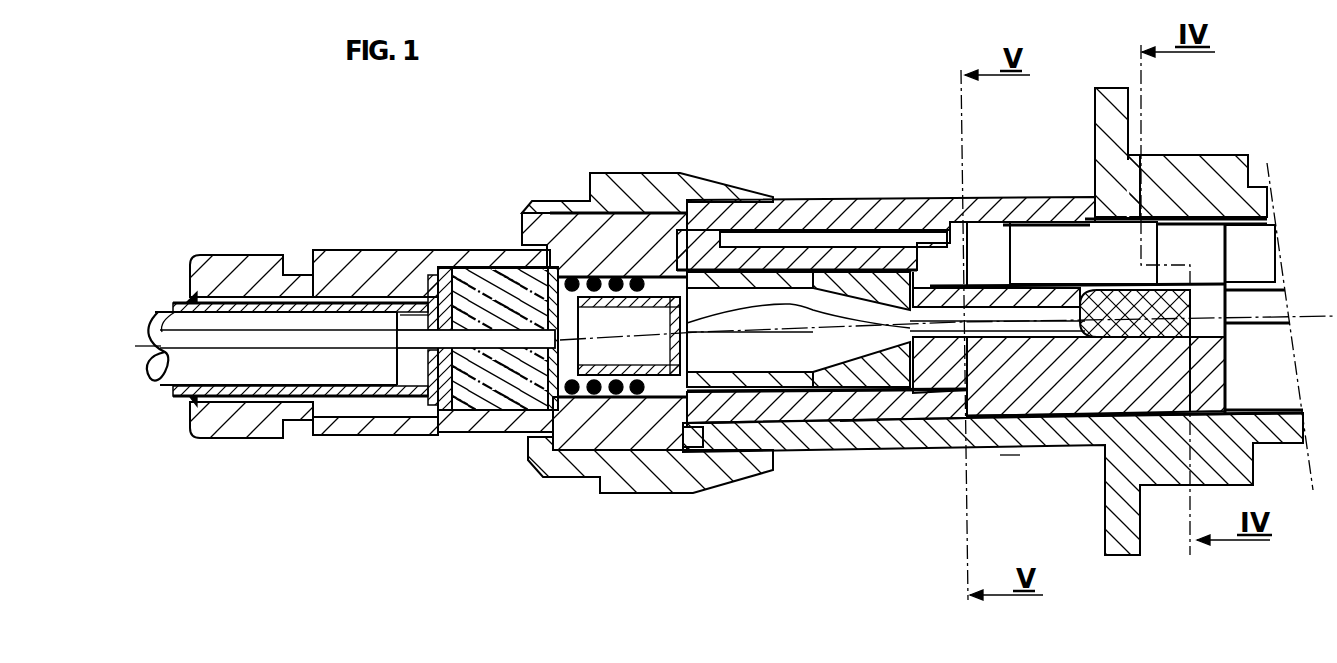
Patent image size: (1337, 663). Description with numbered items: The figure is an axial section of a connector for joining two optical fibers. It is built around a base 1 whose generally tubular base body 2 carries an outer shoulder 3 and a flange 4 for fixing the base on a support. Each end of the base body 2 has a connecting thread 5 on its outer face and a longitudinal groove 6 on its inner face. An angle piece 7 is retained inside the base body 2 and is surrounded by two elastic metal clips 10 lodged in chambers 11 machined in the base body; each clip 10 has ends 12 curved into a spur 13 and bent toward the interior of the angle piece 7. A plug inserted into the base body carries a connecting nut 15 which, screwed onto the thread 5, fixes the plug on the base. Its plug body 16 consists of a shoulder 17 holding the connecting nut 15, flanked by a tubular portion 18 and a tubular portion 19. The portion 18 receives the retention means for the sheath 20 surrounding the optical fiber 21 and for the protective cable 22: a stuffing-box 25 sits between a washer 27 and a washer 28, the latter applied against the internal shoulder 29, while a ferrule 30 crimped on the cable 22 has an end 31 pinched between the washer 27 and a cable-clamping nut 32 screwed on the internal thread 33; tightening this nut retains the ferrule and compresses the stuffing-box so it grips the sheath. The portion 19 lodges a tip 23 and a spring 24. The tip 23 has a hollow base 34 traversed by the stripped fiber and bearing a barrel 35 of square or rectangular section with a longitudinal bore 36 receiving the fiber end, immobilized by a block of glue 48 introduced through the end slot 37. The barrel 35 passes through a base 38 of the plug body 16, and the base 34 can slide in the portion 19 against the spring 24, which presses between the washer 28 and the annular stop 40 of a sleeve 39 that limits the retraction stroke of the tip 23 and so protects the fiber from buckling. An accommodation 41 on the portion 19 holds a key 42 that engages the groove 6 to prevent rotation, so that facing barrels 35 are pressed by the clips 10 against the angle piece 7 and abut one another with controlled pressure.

The base 1 is at (1020, 452).
The base body 2 is at (905, 445).
The outer shoulder 3 is at (1178, 172).
The flange 4 is at (1118, 118).
The connecting thread 5 is at (790, 202).
The longitudinal groove 6 is at (690, 270).
The angle piece 7 is at (1190, 390).
The elastic metal clip 10 is at (1280, 399).
The chamber 11 is at (1265, 228).
The end of clip 12 is at (1087, 277).
The spur 13 is at (1050, 284).
The connecting nut 15 is at (641, 192).
The plug body 16 is at (730, 426).
The shoulder 17 is at (603, 225).
The tubular portion 18 is at (450, 265).
The tubular portion 19 is at (824, 412).
The sheath 20 is at (470, 395).
The optical fiber 21 is at (792, 310).
The cable 22 is at (165, 328).
The tip 23 is at (858, 430).
The spring 24 is at (578, 396).
The stuffing-box 25 is at (520, 396).
The washer 27 is at (440, 320).
The washer 28 is at (533, 300).
The internal shoulder 29 is at (573, 272).
The ferrule 30 is at (187, 408).
The end of ferrule 31 is at (432, 402).
The cable-clamping nut 32 is at (262, 272).
The internal thread 33 is at (336, 252).
The hollow base 34 is at (703, 382).
The barrel 35 is at (1042, 352).
The longitudinal bore 36 is at (975, 317).
The end slot 37 is at (1150, 292).
The base of plug body 38 is at (962, 402).
The sleeve 39 is at (600, 374).
The annular stop 40 is at (655, 388).
The accommodation 41 is at (912, 252).
The key 42 is at (842, 240).
The block of glue 48 is at (1148, 350).